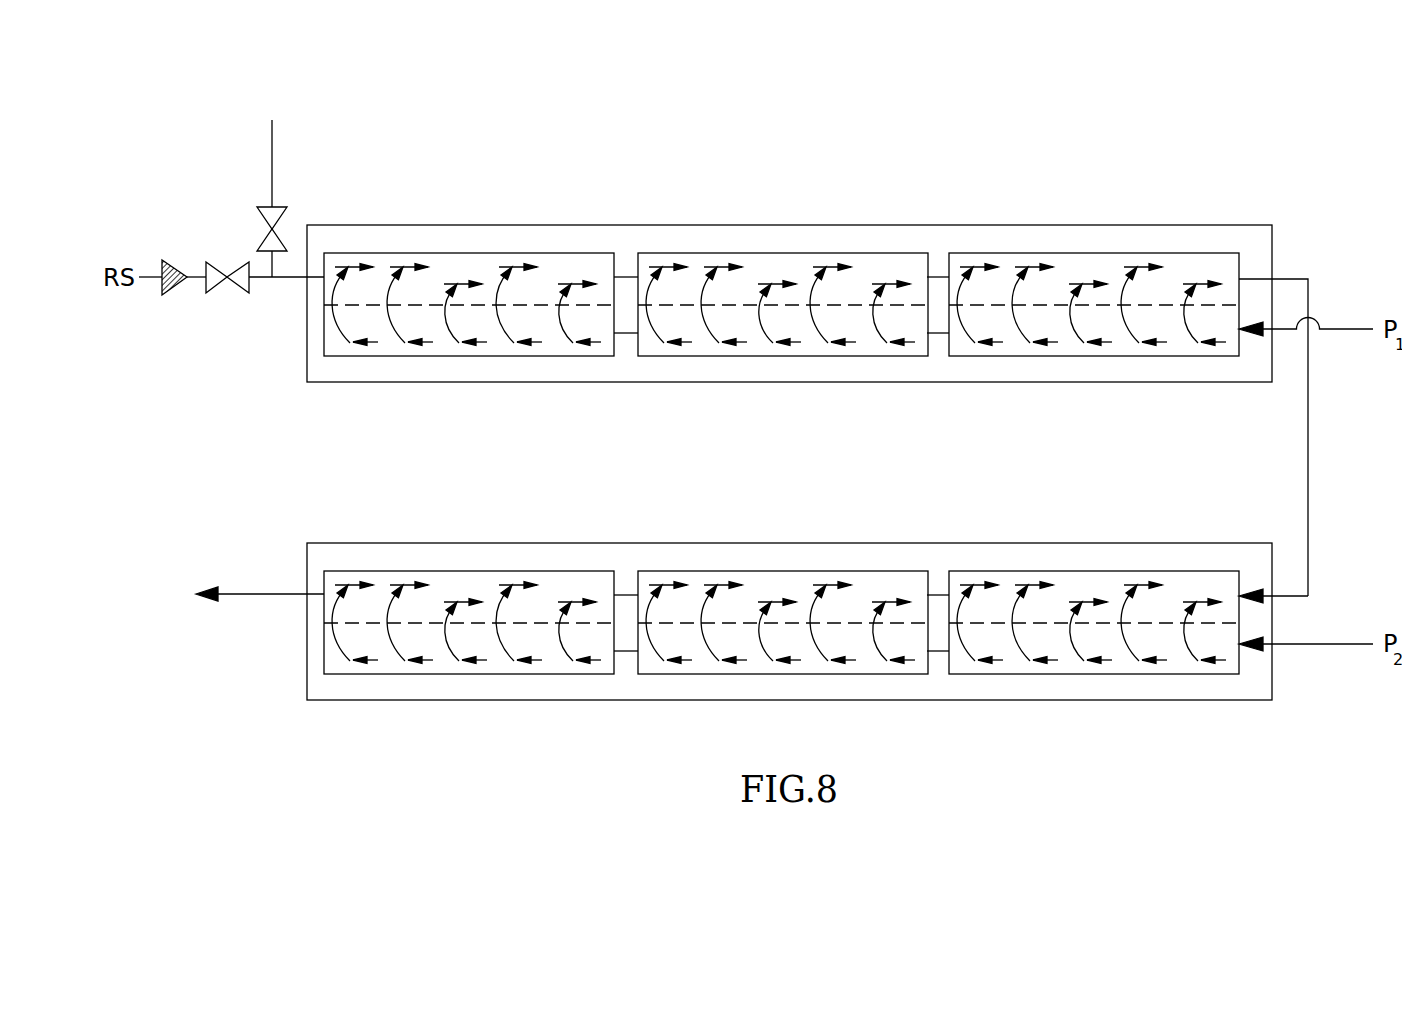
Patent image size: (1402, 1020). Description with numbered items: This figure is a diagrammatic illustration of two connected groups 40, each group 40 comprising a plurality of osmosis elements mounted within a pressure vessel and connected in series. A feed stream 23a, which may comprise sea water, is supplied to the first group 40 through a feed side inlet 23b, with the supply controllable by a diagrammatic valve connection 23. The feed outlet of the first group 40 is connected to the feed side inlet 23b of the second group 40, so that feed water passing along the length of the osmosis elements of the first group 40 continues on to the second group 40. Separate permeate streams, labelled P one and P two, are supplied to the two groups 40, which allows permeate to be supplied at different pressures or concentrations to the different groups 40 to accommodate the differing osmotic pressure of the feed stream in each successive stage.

The group 40 is at (493, 225).
The valve connection 23 is at (236, 289).
The feed stream 23a is at (1294, 280).
The feed side inlet 23b is at (1293, 598).